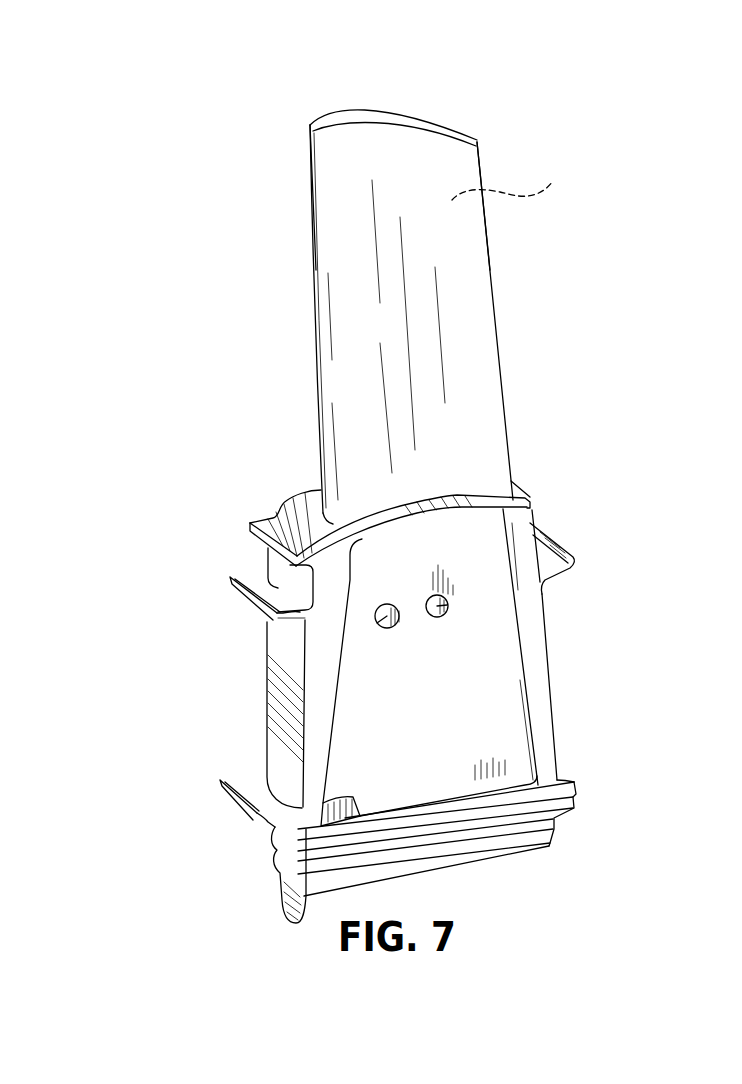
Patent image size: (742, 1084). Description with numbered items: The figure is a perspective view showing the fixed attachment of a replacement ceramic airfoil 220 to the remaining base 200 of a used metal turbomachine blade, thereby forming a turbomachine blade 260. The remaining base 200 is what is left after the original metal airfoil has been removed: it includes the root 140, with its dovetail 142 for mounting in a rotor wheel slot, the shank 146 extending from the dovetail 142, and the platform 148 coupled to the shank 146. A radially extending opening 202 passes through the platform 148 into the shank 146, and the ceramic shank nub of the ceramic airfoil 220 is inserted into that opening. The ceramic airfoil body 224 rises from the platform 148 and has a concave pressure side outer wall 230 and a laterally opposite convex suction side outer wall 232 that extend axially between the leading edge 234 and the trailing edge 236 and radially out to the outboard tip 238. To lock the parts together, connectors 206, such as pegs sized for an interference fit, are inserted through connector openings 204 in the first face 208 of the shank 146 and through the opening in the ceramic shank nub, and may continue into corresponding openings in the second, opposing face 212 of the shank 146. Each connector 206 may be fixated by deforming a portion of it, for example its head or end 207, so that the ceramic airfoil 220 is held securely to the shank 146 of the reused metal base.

The root 140 is at (582, 773).
The dovetail 142 is at (493, 850).
The shank 146 is at (495, 660).
The platform 148 is at (300, 505).
The remaining base 200 is at (216, 731).
The radially extending opening 202 is at (470, 492).
The connector opening 204 is at (446, 597).
The connector 206 is at (377, 624).
The head or end 207 is at (445, 617).
The first face 208 is at (497, 698).
The second, opposing face 212 is at (273, 703).
The ceramic airfoil 220 is at (510, 266).
The ceramic airfoil body 224 is at (325, 342).
The concave pressure side outer wall 230 is at (490, 358).
The convex suction side outer wall 232 is at (521, 179).
The leading edge 234 is at (323, 173).
The trailing edge 236 is at (482, 155).
The outboard tip 238 is at (395, 112).
The turbomachine blade 260 is at (483, 123).